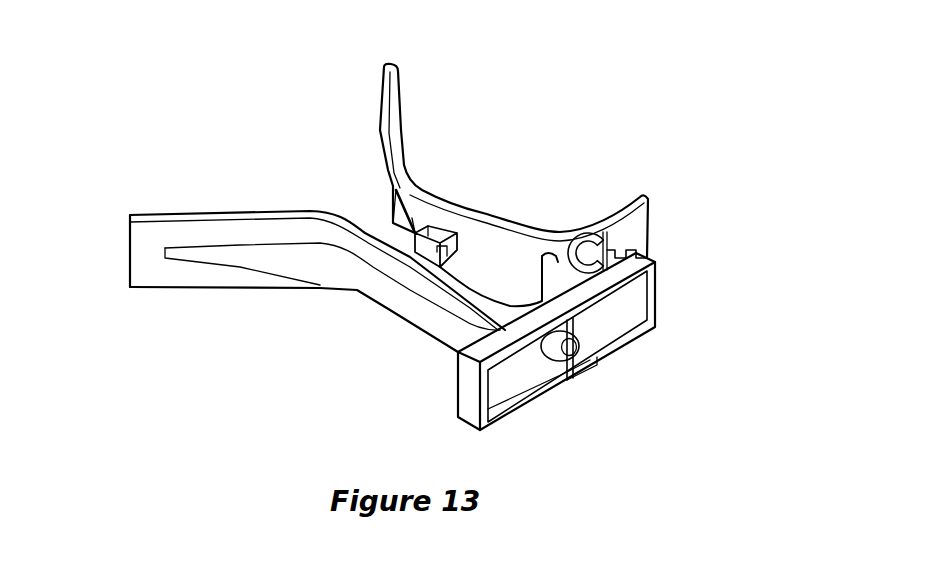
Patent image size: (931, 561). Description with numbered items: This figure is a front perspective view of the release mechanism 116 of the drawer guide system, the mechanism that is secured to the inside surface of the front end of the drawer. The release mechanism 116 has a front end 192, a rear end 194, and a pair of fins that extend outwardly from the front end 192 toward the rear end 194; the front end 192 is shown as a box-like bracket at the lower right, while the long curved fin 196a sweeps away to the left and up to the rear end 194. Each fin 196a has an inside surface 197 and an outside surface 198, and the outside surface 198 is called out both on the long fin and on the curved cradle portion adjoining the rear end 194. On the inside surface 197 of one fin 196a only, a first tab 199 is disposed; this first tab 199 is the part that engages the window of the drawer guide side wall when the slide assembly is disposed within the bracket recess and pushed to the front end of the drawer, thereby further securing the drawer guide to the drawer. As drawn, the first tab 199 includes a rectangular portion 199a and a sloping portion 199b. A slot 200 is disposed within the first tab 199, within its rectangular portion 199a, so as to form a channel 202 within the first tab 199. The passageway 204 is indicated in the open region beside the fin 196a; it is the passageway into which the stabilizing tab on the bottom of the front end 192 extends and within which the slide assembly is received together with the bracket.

The release mechanism 116 is at (596, 86).
The passageway 204 is at (247, 135).
The fin 196a is at (144, 262).
The outside surface 198 is at (560, 232).
The rear end 194 is at (392, 70).
The inside surface 197 is at (392, 177).
The channel 202 is at (397, 222).
The slot 200 is at (456, 259).
The first tab 199 is at (446, 228).
The rectangular portion 199a is at (428, 222).
The sloping portion 199b is at (412, 218).
The front end 192 is at (660, 293).